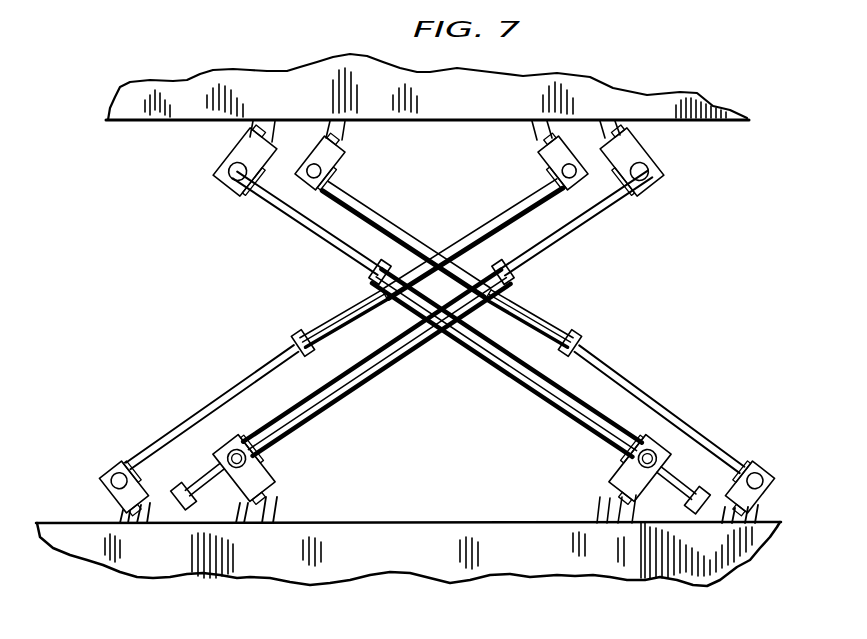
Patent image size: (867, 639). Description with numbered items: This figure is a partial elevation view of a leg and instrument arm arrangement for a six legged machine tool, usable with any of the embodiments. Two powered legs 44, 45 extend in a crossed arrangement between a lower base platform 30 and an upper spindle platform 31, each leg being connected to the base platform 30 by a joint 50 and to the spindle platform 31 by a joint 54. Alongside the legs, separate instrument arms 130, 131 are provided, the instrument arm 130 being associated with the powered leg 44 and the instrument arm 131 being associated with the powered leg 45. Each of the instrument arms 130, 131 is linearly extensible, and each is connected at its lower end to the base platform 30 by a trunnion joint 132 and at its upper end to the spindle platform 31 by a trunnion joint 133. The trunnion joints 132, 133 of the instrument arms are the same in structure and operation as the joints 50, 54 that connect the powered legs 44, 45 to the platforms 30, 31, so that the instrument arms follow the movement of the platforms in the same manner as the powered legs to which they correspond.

The base platform 30 is at (712, 568).
The spindle platform 31 is at (650, 100).
The powered leg 44 is at (583, 423).
The powered leg 45 is at (333, 387).
The joint 50 is at (297, 485).
The joint 54 is at (668, 153).
The instrument arm 130 is at (573, 344).
The instrument arm 131 is at (325, 330).
The trunnion joint 132 is at (88, 474).
The trunnion joint 133 is at (352, 157).